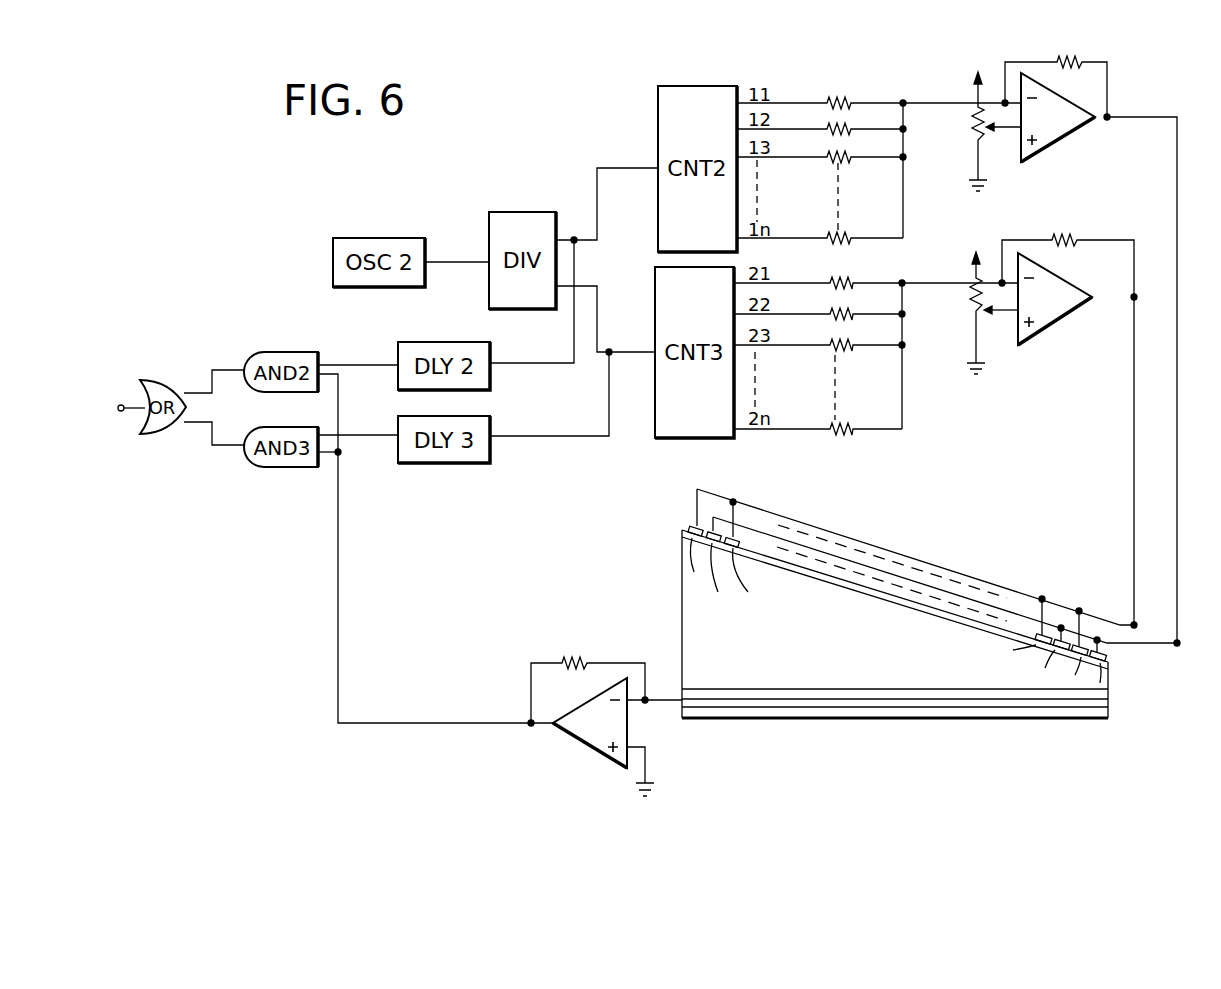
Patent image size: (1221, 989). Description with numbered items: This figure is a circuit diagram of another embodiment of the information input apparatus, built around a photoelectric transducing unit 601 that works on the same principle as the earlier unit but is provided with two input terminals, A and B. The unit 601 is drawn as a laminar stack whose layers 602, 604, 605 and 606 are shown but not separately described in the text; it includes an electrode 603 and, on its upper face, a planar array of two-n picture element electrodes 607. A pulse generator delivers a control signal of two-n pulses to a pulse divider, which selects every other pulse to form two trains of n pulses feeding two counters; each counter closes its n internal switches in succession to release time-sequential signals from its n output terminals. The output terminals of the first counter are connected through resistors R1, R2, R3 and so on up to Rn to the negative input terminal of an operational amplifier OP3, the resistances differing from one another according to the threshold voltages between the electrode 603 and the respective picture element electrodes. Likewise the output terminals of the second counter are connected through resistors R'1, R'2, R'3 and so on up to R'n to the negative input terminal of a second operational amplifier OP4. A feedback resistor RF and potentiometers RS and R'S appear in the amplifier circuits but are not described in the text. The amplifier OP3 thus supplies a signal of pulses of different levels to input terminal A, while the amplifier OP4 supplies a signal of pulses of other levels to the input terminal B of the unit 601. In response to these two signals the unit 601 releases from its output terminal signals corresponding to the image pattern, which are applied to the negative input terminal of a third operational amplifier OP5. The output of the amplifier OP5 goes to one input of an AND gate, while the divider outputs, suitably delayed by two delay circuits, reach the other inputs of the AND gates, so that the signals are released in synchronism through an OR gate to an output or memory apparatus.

The photoelectric transducing unit 601 is at (924, 620).
The bottom layer 602 is at (1110, 711).
The electrode 603 is at (1110, 701).
The layer 604 is at (1110, 691).
The layer 605 is at (1110, 681).
The wedge-shaped top layer 606 is at (1110, 665).
The picture element electrodes 607 is at (690, 524).
The input terminal B is at (1130, 622).
The resistor R1 is at (840, 98).
The resistor R2 is at (828, 128).
The resistor R3 is at (828, 160).
The resistor Rn is at (830, 236).
The resistor R'1 is at (818, 270).
The resistor R'2 is at (818, 305).
The resistor R'3 is at (818, 336).
The resistor R'n is at (818, 414).
The potentiometer RS is at (972, 127).
The potentiometer R'S is at (966, 313).
The feedback resistor RF is at (1085, 62).
The operational amplifier OP3 is at (1058, 117).
The operational amplifier OP4 is at (1055, 299).
The operational amplifier OP5 is at (590, 723).